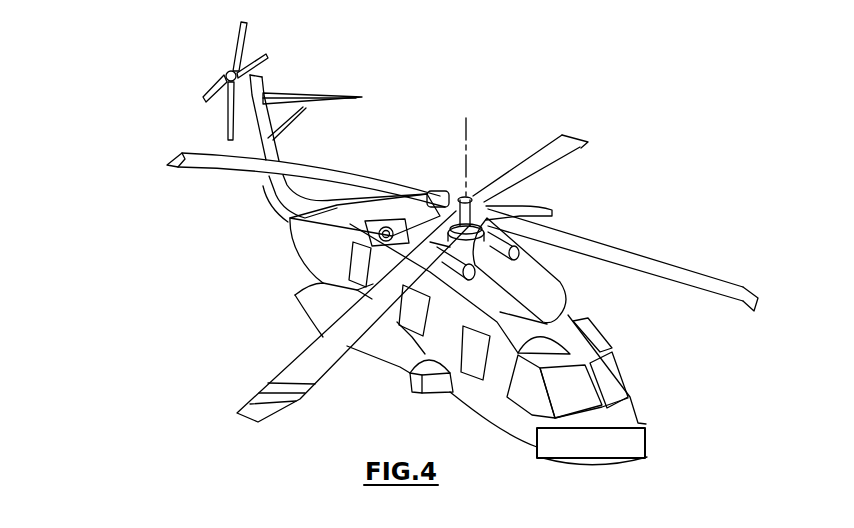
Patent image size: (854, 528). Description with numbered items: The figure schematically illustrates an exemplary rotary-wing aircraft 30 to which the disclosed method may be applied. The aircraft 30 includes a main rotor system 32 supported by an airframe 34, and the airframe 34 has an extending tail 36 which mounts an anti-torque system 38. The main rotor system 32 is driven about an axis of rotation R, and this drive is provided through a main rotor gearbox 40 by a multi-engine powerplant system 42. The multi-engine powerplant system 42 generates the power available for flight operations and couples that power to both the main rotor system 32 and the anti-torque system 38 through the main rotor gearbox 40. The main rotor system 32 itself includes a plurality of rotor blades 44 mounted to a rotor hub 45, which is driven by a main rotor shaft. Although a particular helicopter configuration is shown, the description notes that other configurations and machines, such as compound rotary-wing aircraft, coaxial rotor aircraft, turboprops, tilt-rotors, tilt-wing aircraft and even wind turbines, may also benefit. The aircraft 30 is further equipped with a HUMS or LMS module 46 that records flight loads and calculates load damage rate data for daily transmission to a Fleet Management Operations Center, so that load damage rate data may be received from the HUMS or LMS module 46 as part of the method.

The rotary-wing aircraft 30 is at (117, 108).
The main rotor system 32 is at (462, 266).
The airframe 34 is at (435, 343).
The extending tail 36 is at (263, 186).
The anti-torque system 38 is at (222, 65).
The main rotor gearbox 40 is at (540, 265).
The multi-engine powerplant system 42 is at (368, 228).
The rotor blades 44 is at (647, 258).
The rotor hub 45 is at (550, 207).
The HUMS or LMS module 46 is at (575, 460).
The axis of rotation R is at (468, 140).